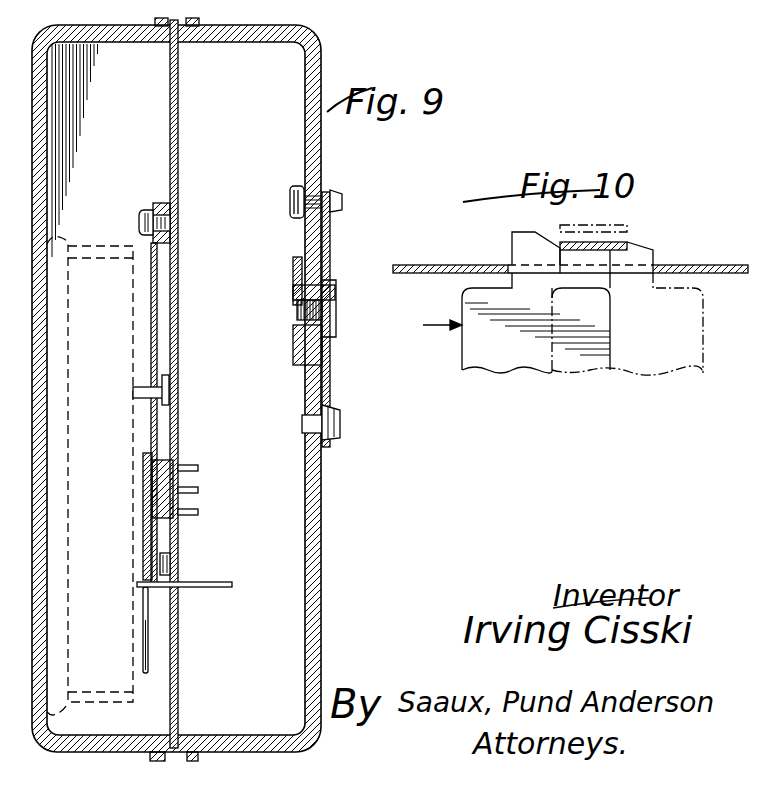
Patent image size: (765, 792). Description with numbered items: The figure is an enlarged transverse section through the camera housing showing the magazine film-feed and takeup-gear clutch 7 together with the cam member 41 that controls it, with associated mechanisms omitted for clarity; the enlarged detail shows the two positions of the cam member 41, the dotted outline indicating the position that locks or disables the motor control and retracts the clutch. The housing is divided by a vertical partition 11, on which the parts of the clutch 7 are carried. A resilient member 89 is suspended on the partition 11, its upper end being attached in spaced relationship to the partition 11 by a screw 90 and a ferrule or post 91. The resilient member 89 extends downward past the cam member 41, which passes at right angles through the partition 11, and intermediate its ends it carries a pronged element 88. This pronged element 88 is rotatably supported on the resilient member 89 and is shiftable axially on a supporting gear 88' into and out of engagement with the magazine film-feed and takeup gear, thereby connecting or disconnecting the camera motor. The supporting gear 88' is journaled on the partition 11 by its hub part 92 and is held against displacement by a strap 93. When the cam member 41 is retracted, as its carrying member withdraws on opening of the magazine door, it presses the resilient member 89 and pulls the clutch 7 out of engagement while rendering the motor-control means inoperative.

In FIG. 9, the vertical partition 11 is at (180, 283).
In FIG. 9, the ferrule or post 91 is at (158, 203).
In FIG. 9, the screw 90 is at (140, 217).
In FIG. 9, the resilient member 89 is at (151, 351).
In FIG. 10, the resilient member 89 is at (627, 243).
In FIG. 9, the strap 93 is at (163, 421).
In FIG. 9, the pronged element 88 is at (195, 489).
In FIG. 9, the supporting gear 88' is at (188, 563).
In FIG. 9, the hub part 92 is at (178, 463).
In FIG. 9, the magazine film-feed and takeup-gear clutch 7 is at (203, 455).
In FIG. 9, the cam member 41 is at (200, 587).
In FIG. 10, the cam member 41 is at (512, 246).